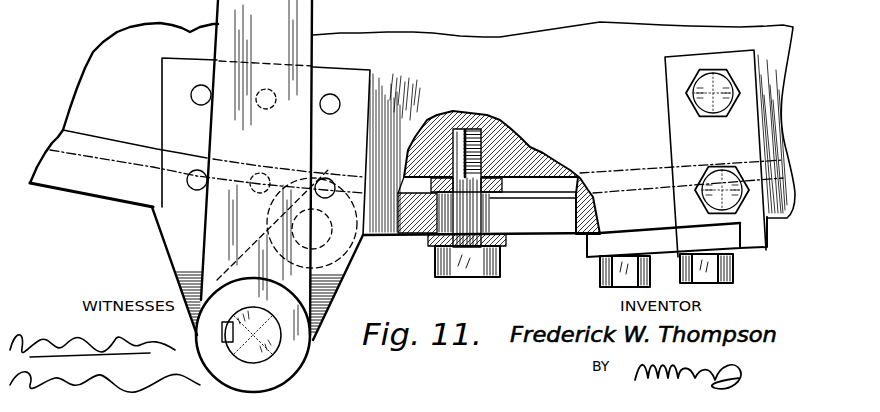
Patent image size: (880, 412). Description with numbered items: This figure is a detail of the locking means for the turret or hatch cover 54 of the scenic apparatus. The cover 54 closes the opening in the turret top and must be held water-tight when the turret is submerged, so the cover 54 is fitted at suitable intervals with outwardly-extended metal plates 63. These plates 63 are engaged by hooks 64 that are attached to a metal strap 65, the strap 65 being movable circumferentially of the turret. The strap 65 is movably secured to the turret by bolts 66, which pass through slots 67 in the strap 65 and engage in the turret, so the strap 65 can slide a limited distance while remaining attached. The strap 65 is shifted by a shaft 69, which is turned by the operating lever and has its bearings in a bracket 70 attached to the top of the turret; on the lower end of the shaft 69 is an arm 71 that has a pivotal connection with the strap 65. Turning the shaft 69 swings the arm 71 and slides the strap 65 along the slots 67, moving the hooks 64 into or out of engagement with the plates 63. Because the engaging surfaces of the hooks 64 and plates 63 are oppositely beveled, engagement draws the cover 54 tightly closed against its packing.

The cover 54 is at (681, 153).
The metal plates 63 is at (753, 252).
The hooks 64 is at (595, 251).
The metal strap 65 is at (550, 236).
The bolts 66 is at (511, 249).
The slots 67 is at (530, 222).
The shaft 69 is at (268, 348).
The bracket 70 is at (168, 256).
The arm 71 is at (322, 262).